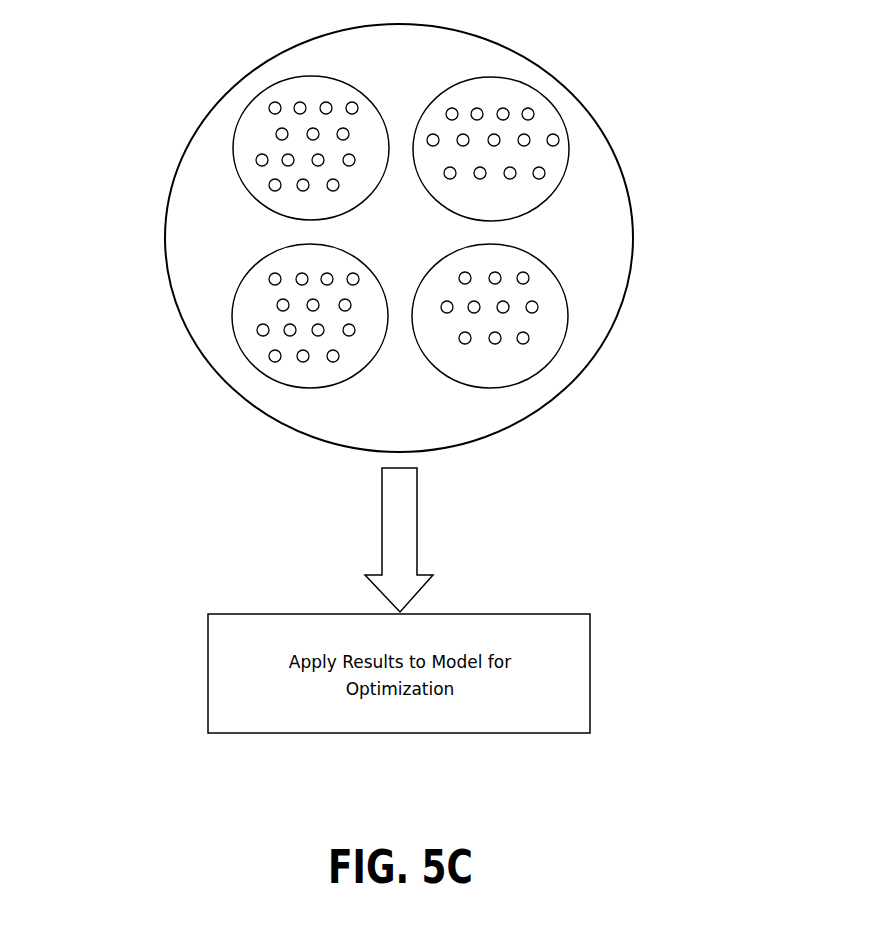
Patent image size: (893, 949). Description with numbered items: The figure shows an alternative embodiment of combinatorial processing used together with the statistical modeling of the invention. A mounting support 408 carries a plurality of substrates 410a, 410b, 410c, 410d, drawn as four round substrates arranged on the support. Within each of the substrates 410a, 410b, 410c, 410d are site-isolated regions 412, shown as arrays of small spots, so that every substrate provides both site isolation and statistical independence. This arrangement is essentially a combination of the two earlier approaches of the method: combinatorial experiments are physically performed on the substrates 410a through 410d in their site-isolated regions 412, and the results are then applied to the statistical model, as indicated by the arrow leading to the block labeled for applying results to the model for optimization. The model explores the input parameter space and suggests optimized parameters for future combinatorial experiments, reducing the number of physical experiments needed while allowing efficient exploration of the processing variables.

The mounting support 408 is at (535, 415).
The substrate 410a is at (558, 318).
The substrate 410b is at (563, 160).
The substrate 410c is at (257, 112).
The substrate 410d is at (258, 360).
The site-isolated regions 412 is at (445, 176).